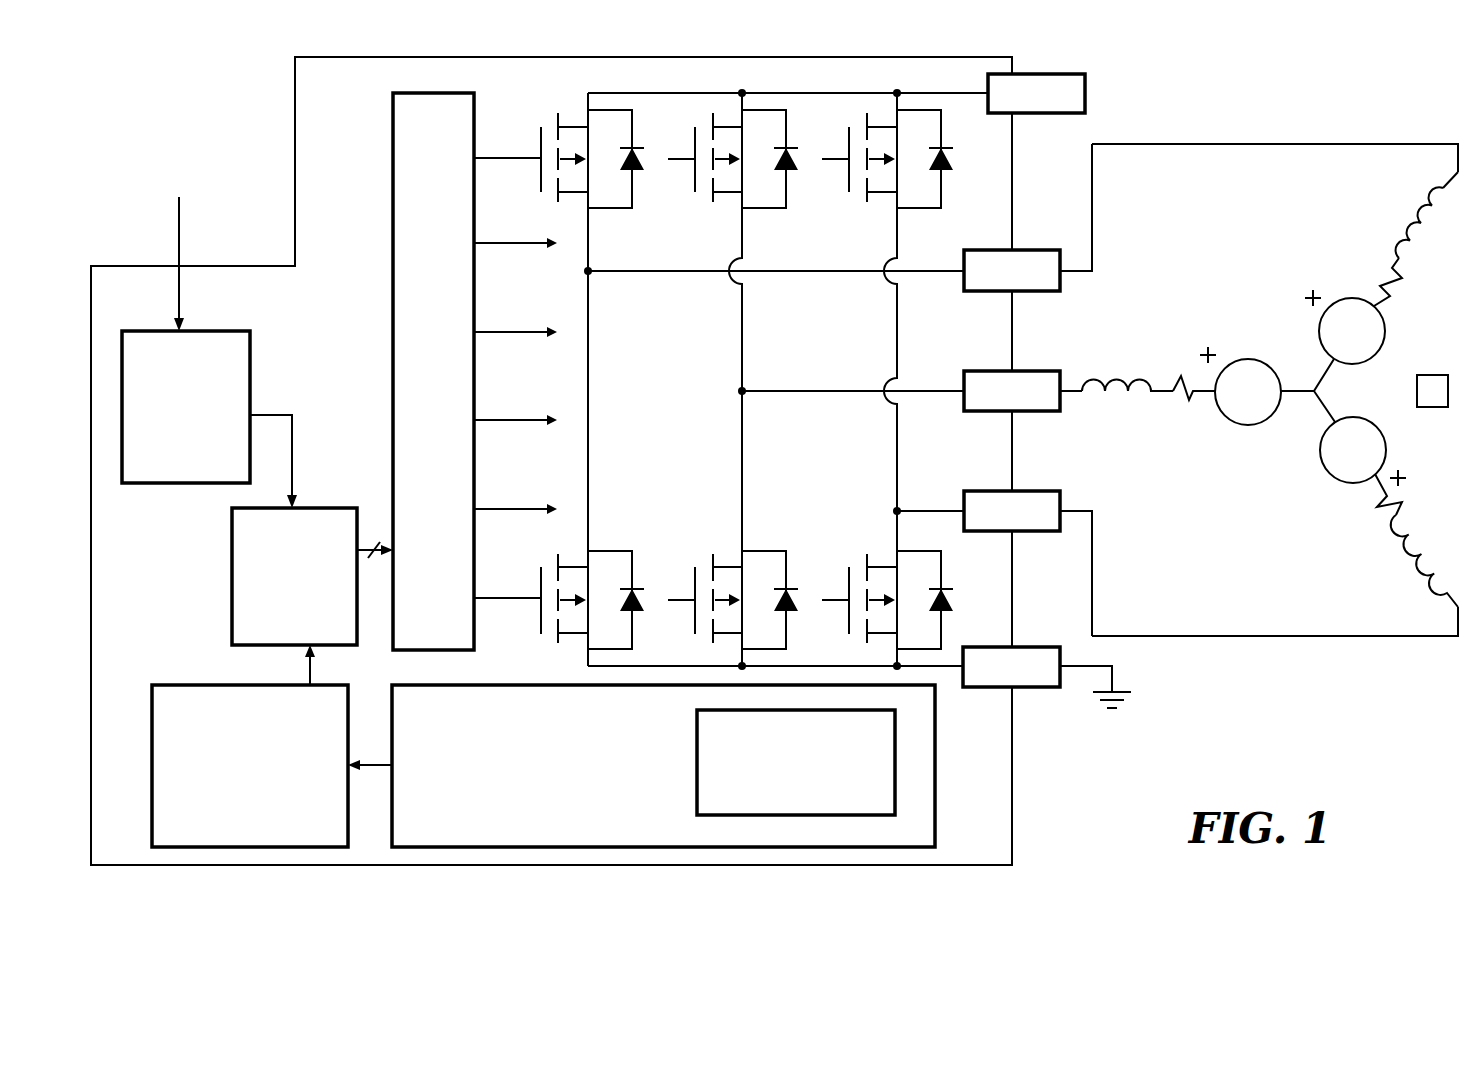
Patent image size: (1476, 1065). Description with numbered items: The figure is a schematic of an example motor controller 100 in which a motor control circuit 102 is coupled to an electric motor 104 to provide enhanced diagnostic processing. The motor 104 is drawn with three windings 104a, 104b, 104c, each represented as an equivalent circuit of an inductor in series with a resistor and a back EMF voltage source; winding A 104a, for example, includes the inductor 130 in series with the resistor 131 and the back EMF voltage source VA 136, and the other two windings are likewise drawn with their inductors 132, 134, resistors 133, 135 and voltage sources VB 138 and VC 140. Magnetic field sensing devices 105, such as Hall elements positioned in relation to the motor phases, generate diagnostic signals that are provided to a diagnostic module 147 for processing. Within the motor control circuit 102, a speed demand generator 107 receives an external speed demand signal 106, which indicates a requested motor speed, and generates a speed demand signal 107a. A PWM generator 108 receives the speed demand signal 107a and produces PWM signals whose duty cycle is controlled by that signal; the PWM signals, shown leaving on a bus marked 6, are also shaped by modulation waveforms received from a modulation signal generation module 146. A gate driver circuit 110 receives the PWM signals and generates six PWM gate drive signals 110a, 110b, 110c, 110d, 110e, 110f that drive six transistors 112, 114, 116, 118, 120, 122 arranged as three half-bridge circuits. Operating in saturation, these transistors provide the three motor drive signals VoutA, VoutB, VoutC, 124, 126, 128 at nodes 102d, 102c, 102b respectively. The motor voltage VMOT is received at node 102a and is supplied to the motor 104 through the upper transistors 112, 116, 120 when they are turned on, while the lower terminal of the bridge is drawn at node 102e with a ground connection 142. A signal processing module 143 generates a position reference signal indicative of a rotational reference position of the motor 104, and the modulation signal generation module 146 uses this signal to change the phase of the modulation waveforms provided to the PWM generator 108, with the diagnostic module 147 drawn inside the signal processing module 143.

The motor controller 100 is at (1162, 42).
The motor control circuit 102 is at (314, 109).
The node 102a is at (1085, 93).
The node 102b is at (1027, 249).
The node 102c is at (1000, 370).
The node 102d is at (1000, 490).
The GND terminal 102e is at (1041, 646).
The electric motor 104 is at (1313, 119).
The winding A 104a is at (1320, 545).
The winding 104b is at (1201, 346).
The winding 104c is at (1346, 221).
The magnetic field sensing devices 105 is at (1417, 392).
The external speed demand signal 106 is at (181, 216).
The speed demand generator 107 is at (168, 468).
The speed demand signal 107a is at (287, 413).
The pulse width modulation (PWM) generator 108 is at (276, 619).
The PWM signal bus 6 is at (375, 535).
The gate driver circuit 110 is at (415, 384).
The PWM gate drive signal 110a is at (506, 153).
The PWM gate drive signal 110b is at (505, 240).
The PWM gate drive signal 110c is at (511, 330).
The PWM gate drive signal 110d is at (511, 418).
The PWM gate drive signal 110e is at (511, 507).
The PWM gate drive signal 110f is at (512, 597).
The transistor 112 is at (603, 210).
The transistor 114 is at (616, 550).
The transistor 116 is at (758, 210).
The transistor 118 is at (771, 550).
The transistor 120 is at (914, 210).
The transistor 122 is at (944, 554).
The motor drive signal VoutA 124 is at (1093, 578).
The motor drive signal VoutB 126 is at (1070, 396).
The motor drive signal VoutC 128 is at (1092, 185).
The inductor 130 is at (1428, 579).
The resistor 131 is at (1376, 500).
The phase B winding inductance 132 is at (1130, 378).
The phase B winding resistance 133 is at (1182, 404).
The phase C winding inductance 134 is at (1439, 192).
The phase C winding resistance 135 is at (1390, 265).
The back EMF voltage source VA 136 is at (1319, 447).
The phase B back-EMF voltage source VB 138 is at (1248, 358).
The phase C back-EMF voltage source VC 140 is at (1385, 318).
The ground 142 is at (1114, 672).
The signal processing module 143 is at (527, 823).
The modulation signal generation module 146 is at (232, 833).
The diagnostic module 147 is at (778, 799).